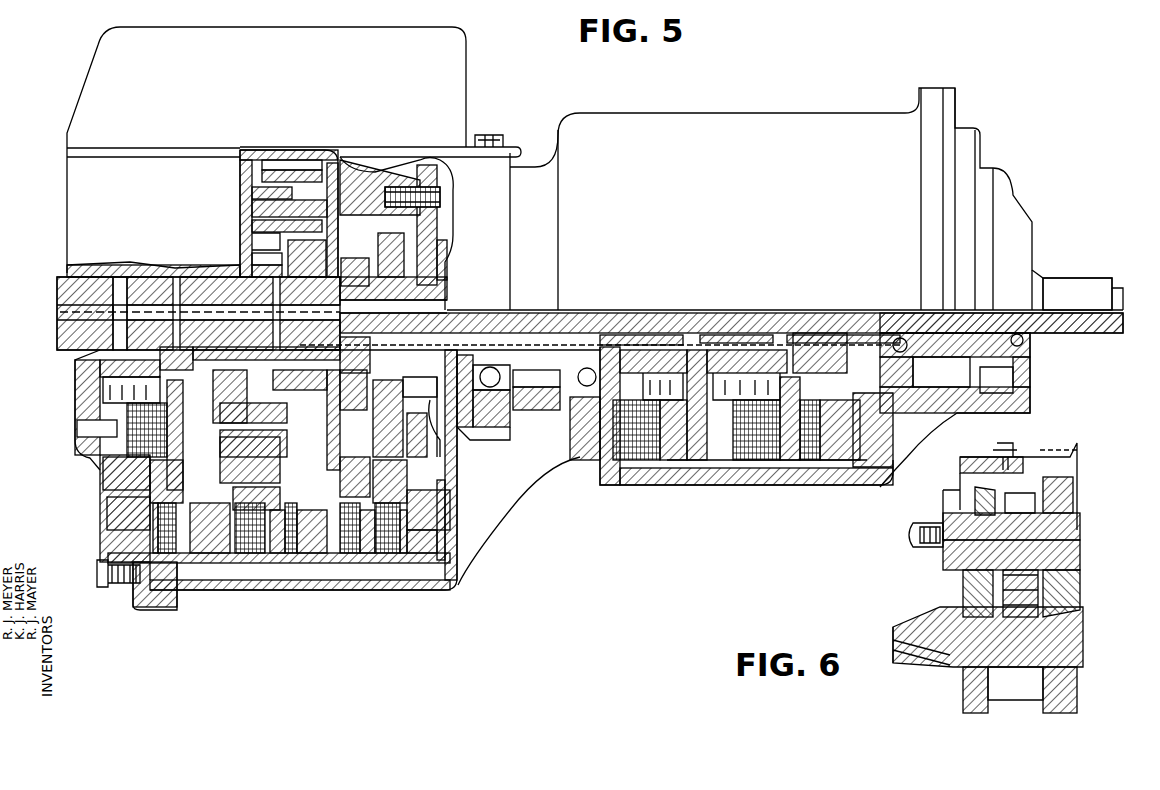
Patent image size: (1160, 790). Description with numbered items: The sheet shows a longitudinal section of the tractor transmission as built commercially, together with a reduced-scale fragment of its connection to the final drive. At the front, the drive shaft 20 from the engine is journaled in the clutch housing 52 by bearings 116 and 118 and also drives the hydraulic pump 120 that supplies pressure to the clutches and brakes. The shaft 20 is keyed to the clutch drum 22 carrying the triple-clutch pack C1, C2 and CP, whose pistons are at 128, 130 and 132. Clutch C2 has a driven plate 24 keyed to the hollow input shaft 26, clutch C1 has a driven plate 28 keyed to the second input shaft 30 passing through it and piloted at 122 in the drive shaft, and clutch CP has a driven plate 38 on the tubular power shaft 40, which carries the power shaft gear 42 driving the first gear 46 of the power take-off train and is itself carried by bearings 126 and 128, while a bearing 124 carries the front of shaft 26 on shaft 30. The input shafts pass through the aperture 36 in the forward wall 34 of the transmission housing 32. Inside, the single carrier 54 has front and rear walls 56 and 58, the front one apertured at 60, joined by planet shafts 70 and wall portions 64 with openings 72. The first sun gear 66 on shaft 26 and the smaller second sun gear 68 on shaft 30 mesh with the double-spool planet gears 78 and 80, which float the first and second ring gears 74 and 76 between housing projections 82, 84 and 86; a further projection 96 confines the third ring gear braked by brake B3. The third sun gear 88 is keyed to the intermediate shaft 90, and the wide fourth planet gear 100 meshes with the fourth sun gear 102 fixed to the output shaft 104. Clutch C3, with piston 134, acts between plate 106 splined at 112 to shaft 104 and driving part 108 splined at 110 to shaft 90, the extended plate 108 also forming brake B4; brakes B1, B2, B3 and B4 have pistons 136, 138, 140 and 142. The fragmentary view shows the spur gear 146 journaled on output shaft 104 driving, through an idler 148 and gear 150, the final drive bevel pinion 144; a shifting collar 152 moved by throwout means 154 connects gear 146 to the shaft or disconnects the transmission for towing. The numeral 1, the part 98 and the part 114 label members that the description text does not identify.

In FIG. 5, the rear support member 1 is at (842, 465).
In FIG. 5, the drive shaft 20 is at (1078, 312).
In FIG. 5, the clutch drum 22 is at (622, 485).
In FIG. 5, the driven plate 24 is at (778, 350).
In FIG. 5, the hollow input shaft 26 is at (603, 338).
In FIG. 5, the driven clutch plate 28 is at (821, 336).
In FIG. 5, the second input shaft 30 is at (575, 328).
In FIG. 5, the transmission housing 32 is at (508, 150).
In FIG. 6, the transmission housing 32 is at (1077, 485).
In FIG. 5, the forward wall 34 is at (487, 420).
In FIG. 5, the central aperture 36 is at (484, 330).
In FIG. 5, the driven clutch plate 38 is at (650, 365).
In FIG. 5, the tubular power shaft 40 is at (625, 360).
In FIG. 5, the power shaft gear 42 is at (536, 367).
In FIG. 5, the first gear 46 is at (540, 410).
In FIG. 5, the clutch housing 52 is at (752, 116).
In FIG. 5, the carrier 54 is at (394, 164).
In FIG. 5, the front wall 56 is at (422, 167).
In FIG. 5, the rear wall 58 is at (220, 462).
In FIG. 5, the front wall aperture 60 is at (440, 262).
In FIG. 5, the wall portion 64 is at (312, 150).
In FIG. 5, the first sun gear 66 is at (390, 235).
In FIG. 5, the second sun gear 68 is at (352, 258).
In FIG. 5, the planet pinion shaft 70 is at (428, 437).
In FIG. 5, the carrier opening 72 is at (425, 461).
In FIG. 5, the first ring gear 74 is at (405, 500).
In FIG. 5, the second ring gear 76 is at (337, 480).
In FIG. 5, the first planet gear 78 is at (390, 481).
In FIG. 5, the second planet gear 80 is at (350, 407).
In FIG. 5, the projecting portion 82 is at (442, 491).
In FIG. 5, the projecting portion 84 is at (368, 560).
In FIG. 5, the projecting portion 86 is at (322, 490).
In FIG. 5, the third sun gear 88 is at (252, 259).
In FIG. 5, the intermediate shaft 90 is at (240, 271).
In FIG. 5, the projecting portion 96 is at (235, 498).
In FIG. 5, the carrier 98 is at (318, 432).
In FIG. 5, the fourth planet gear 100 is at (287, 170).
In FIG. 5, the fourth sun gear 102 is at (242, 246).
In FIG. 5, the output shaft 104 is at (50, 290).
In FIG. 6, the output shaft 104 is at (1080, 516).
In FIG. 5, the clutch plate 106 is at (200, 347).
In FIG. 5, the driving part 108 is at (112, 478).
In FIG. 5, the spline 110 is at (222, 357).
In FIG. 5, the spline 112 is at (185, 286).
In FIG. 5, the pump passage 114 is at (240, 195).
In FIG. 5, the bearing 116 is at (950, 316).
In FIG. 5, the bearing 118 is at (898, 336).
In FIG. 5, the hydraulic pump 120 is at (1030, 372).
In FIG. 5, the pilot 122 is at (865, 336).
In FIG. 5, the bearing 124 is at (748, 336).
In FIG. 5, the bearing 126 is at (580, 388).
In FIG. 5, the bearing / piston 128 is at (492, 372).
In FIG. 5, the piston 130 is at (718, 462).
In FIG. 5, the piston 132 is at (665, 462).
In FIG. 5, the piston 134 is at (93, 406).
In FIG. 5, the piston 136 is at (448, 550).
In FIG. 5, the piston 138 is at (295, 572).
In FIG. 5, the piston 140 is at (175, 563).
In FIG. 5, the piston 142 is at (122, 532).
In FIG. 6, the final drive bevel pinion 144 is at (900, 620).
In FIG. 6, the spur gear 146 is at (1030, 490).
In FIG. 6, the idler 148 is at (1068, 600).
In FIG. 6, the gear 150 is at (1013, 700).
In FIG. 6, the shifting collar 152 is at (965, 585).
In FIG. 6, the throwout means 154 is at (968, 485).
In FIG. 5, the brake B1 is at (400, 565).
In FIG. 5, the brake B2 is at (305, 560).
In FIG. 5, the brake B3 is at (248, 565).
In FIG. 5, the brake B4 is at (193, 565).
In FIG. 5, the clutch C1 is at (812, 462).
In FIG. 5, the clutch C2 is at (760, 462).
In FIG. 5, the clutch C3 is at (145, 458).
In FIG. 5, the clutch CP is at (640, 462).